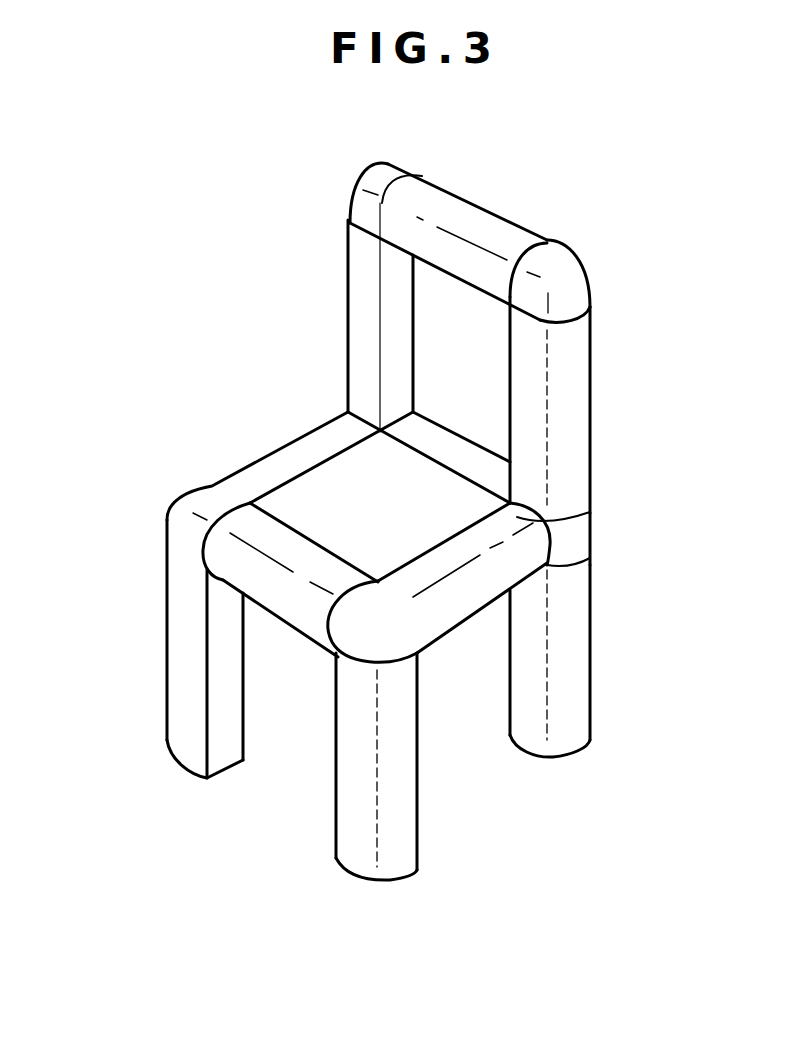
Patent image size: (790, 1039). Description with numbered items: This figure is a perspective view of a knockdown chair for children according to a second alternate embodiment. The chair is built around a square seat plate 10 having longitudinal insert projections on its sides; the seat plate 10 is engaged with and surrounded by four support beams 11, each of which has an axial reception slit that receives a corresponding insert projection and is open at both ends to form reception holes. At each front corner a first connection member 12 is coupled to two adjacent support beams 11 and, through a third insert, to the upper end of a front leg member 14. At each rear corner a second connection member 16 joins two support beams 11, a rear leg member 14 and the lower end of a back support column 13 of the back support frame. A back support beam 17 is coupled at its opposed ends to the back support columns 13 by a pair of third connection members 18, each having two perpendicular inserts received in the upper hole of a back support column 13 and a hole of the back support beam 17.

The seat plate 10 is at (337, 483).
The support beam 11 is at (437, 442).
The first connection member 12 is at (183, 520).
The back support column 13 is at (573, 420).
The leg member 14 is at (187, 662).
The second connection member 16 is at (577, 540).
The back support beam 17 is at (472, 228).
The third connection member 18 is at (563, 292).